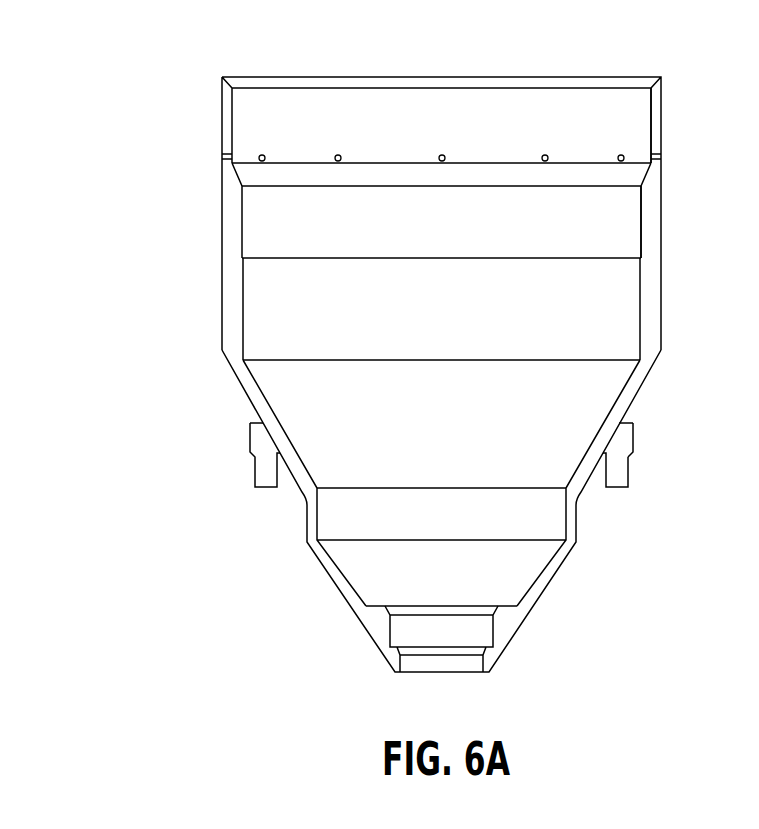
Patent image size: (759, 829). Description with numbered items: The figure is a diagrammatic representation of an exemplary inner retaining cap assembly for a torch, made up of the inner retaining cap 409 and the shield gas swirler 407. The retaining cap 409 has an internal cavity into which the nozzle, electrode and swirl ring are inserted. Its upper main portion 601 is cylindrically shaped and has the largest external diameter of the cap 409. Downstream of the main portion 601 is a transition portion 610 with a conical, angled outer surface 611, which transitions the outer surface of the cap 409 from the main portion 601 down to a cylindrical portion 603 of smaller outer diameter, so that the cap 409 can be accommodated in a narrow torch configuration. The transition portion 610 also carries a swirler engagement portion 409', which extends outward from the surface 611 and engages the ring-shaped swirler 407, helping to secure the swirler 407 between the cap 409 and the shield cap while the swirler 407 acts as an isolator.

The main portion 601 is at (222, 256).
The inner retaining cap 409 is at (687, 174).
The transition portion 610 is at (198, 348).
The angled outer surface 611 is at (247, 393).
The cylindrical portion 603 is at (307, 517).
The swirler engagement portion 409' is at (672, 415).
The shield gas swirler 407 is at (633, 443).